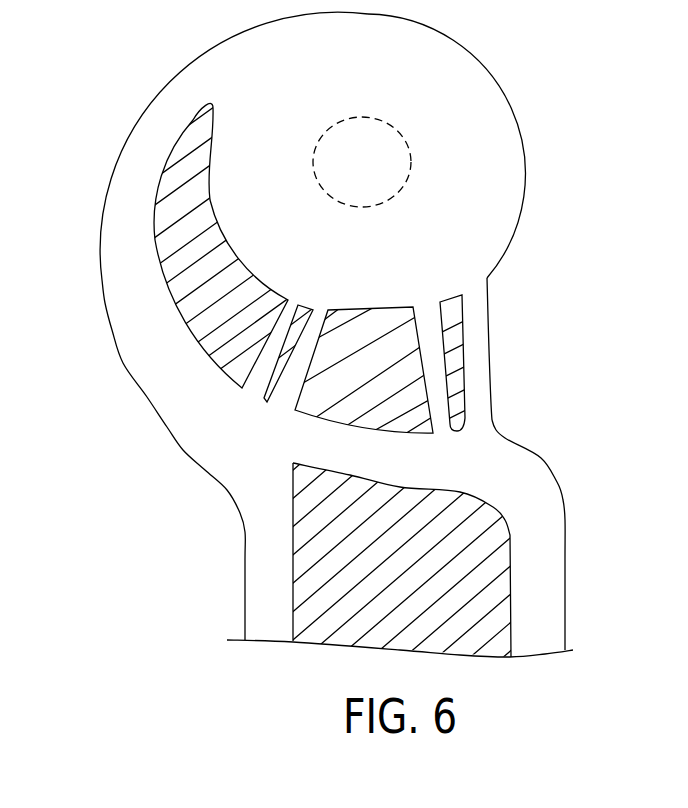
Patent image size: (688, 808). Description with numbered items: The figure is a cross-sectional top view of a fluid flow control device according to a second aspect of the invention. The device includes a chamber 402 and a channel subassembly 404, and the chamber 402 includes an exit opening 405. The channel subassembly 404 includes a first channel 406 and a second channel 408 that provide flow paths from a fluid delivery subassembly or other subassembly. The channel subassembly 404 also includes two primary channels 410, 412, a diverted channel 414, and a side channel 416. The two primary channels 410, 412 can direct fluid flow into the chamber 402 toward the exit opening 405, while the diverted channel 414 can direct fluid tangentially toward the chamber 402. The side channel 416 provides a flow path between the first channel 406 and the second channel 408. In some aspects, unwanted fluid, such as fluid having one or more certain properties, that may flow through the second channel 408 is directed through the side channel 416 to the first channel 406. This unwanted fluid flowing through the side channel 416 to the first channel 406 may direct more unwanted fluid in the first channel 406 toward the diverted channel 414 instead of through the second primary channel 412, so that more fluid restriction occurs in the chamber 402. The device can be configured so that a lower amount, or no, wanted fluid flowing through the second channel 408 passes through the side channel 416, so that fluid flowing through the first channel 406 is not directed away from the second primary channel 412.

The chamber 402 is at (522, 123).
The channel subassembly 404 is at (582, 395).
The exit opening 405 is at (412, 165).
The first channel 406 is at (245, 558).
The second channel 408 is at (567, 530).
The primary channel 410 is at (488, 328).
The second primary channel 412 is at (322, 316).
The diverted channel 414 is at (105, 300).
The side channel 416 is at (405, 487).